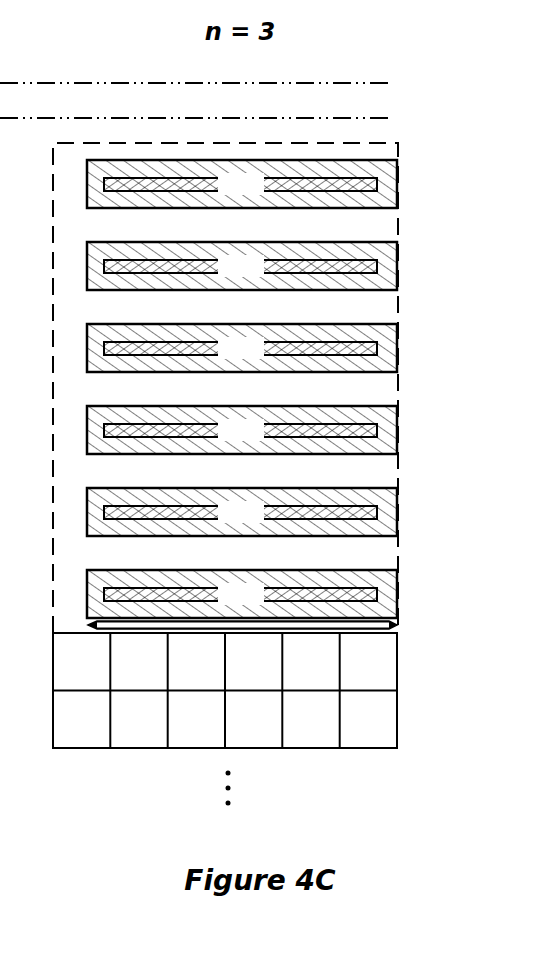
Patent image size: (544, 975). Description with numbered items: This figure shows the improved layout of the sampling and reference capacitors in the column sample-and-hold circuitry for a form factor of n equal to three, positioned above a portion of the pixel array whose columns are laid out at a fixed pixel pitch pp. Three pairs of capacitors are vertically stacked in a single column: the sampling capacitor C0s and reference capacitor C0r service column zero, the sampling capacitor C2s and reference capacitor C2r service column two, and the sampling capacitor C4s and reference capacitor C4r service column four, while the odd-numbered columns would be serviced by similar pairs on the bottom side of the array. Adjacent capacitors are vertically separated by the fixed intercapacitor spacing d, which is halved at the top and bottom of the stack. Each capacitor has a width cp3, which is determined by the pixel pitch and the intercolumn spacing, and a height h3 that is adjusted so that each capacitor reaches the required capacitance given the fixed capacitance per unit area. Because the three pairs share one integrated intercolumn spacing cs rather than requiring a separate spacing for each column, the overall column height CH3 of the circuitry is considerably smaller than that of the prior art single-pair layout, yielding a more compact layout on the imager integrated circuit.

The reference capacitor C4r is at (242, 184).
The sampling capacitor C4s is at (242, 266).
The reference capacitor C2r is at (242, 348).
The sampling capacitor C2s is at (242, 430).
The reference capacitor C0r is at (242, 512).
The sampling capacitor C0s is at (242, 594).
The intercapacitor spacing d is at (225, 208).
The column height CH3 is at (455, 635).
The capacitor height h3 is at (79, 324).
The intercolumn spacing cs is at (87, 431).
The capacitor width cp3 is at (88, 625).
The pixel pitch pp is at (397, 757).